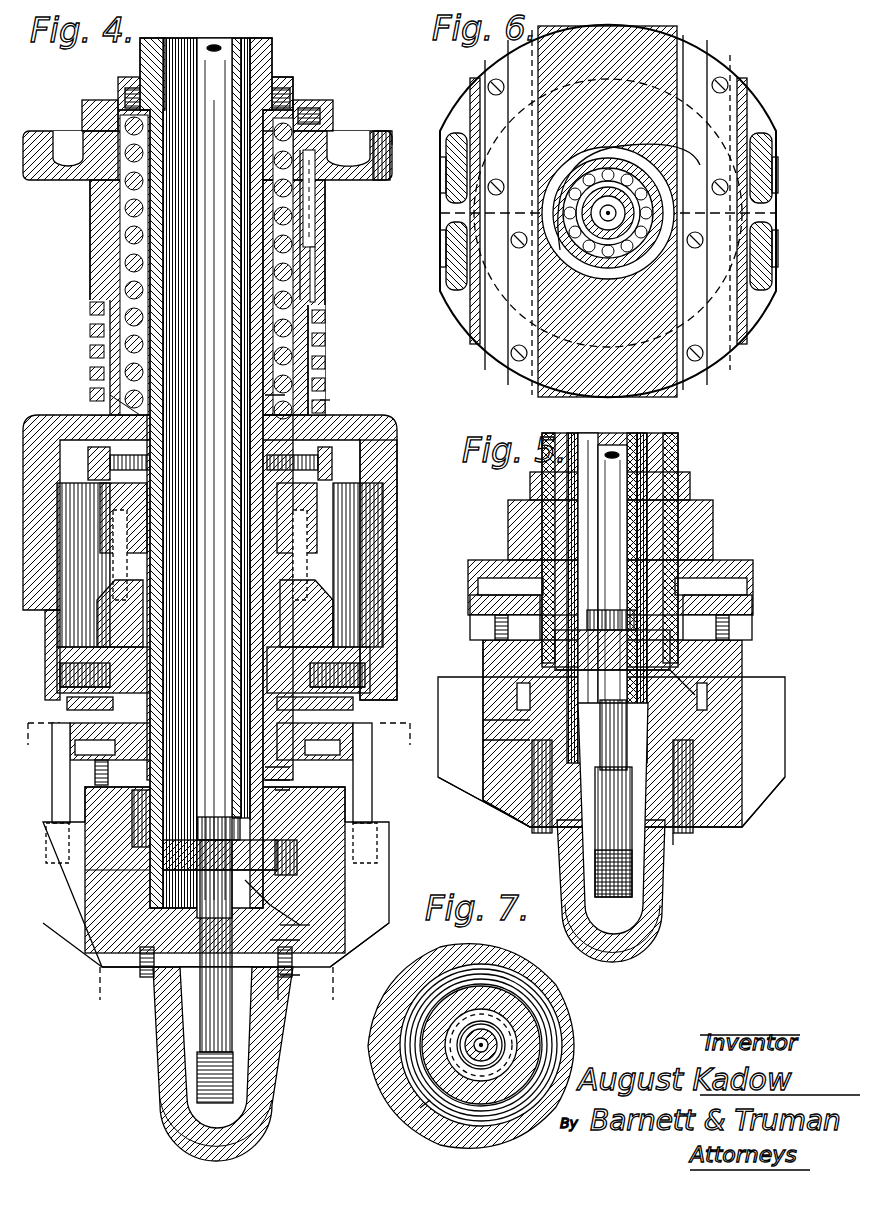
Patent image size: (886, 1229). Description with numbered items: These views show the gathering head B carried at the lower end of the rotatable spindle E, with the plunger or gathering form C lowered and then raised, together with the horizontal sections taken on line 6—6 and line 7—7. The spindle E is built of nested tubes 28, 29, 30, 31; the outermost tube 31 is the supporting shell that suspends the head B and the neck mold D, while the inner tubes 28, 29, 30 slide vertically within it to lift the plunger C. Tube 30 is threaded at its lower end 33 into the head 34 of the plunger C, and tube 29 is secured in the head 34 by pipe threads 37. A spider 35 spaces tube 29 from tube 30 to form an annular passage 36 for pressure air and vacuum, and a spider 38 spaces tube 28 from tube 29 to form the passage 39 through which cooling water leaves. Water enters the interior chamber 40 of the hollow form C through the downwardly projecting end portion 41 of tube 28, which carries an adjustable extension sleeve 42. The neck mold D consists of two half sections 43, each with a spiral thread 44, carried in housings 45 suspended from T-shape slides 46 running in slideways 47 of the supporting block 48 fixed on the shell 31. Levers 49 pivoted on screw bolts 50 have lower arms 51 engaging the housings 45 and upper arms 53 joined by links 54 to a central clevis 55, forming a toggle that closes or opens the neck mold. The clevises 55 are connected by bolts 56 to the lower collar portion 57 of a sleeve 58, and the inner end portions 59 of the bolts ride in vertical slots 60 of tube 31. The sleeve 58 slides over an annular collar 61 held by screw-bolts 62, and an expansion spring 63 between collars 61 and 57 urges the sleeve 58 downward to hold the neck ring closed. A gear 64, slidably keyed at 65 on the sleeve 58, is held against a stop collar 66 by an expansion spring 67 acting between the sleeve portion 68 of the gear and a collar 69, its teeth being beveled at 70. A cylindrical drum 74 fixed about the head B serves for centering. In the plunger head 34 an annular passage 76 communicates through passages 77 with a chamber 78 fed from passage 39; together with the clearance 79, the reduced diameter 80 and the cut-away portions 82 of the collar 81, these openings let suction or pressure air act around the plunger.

In FIG. 4, the innermost tube 28 is at (212, 46).
In FIG. 6, the innermost tube 28 is at (590, 150).
In FIG. 5, the innermost tube 28 is at (612, 452).
In FIG. 7, the innermost tube 28 is at (465, 1046).
In FIG. 4, the tube 29 is at (236, 42).
In FIG. 6, the tube 29 is at (630, 150).
In FIG. 5, the tube 29 is at (640, 448).
In FIG. 7, the tube 29 is at (455, 1036).
In FIG. 4, the tube 30 is at (262, 40).
In FIG. 6, the tube 30 is at (640, 160).
In FIG. 5, the tube 30 is at (665, 440).
In FIG. 4, the outermost tube 31 is at (274, 46).
In FIG. 5, the outermost tube 31 is at (678, 450).
In FIG. 4, the lower end 33 is at (240, 828).
In FIG. 5, the lower end 33 is at (660, 650).
In FIG. 4, the head 34 is at (277, 845).
In FIG. 5, the head 34 is at (665, 665).
In FIG. 4, the spider 35 is at (285, 397).
In FIG. 6, the spider 35 is at (575, 275).
In FIG. 5, the spider 35 is at (655, 560).
In FIG. 4, the intermediate annular passage 36 is at (290, 732).
In FIG. 5, the intermediate annular passage 36 is at (650, 515).
In FIG. 4, the pipe threads 37 is at (93, 926).
In FIG. 5, the pipe threads 37 is at (490, 680).
In FIG. 4, the spider 38 is at (100, 870).
In FIG. 6, the spider 38 is at (555, 258).
In FIG. 5, the spider 38 is at (500, 628).
In FIG. 4, the intermediate passage 39 is at (55, 835).
In FIG. 5, the intermediate passage 39 is at (500, 604).
In FIG. 4, the interior chamber 40 is at (165, 1085).
In FIG. 5, the interior chamber 40 is at (640, 925).
In FIG. 7, the interior chamber 40 is at (430, 1100).
In FIG. 4, the downwardly projecting end portion 41 is at (200, 992).
In FIG. 5, the downwardly projecting end portion 41 is at (600, 770).
In FIG. 4, the adjustable extension sleeve 42 is at (233, 1072).
In FIG. 5, the adjustable extension sleeve 42 is at (632, 885).
In FIG. 4, the half sections 43 is at (100, 968).
In FIG. 6, the half sections 43 is at (745, 108).
In FIG. 5, the half sections 43 is at (532, 800).
In FIG. 4, the spiral thread 44 is at (280, 1000).
In FIG. 5, the spiral thread 44 is at (673, 835).
In FIG. 4, the cage or housing 45 is at (43, 923).
In FIG. 6, the cage or housing 45 is at (462, 293).
In FIG. 5, the cage or housing 45 is at (470, 795).
In FIG. 4, the T-shape slides 46 is at (110, 745).
In FIG. 6, the T-shape slides 46 is at (522, 42).
In FIG. 5, the T-shape slides 46 is at (525, 565).
In FIG. 4, the slideways 47 is at (80, 705).
In FIG. 6, the slideways 47 is at (678, 42).
In FIG. 5, the slideways 47 is at (472, 570).
In FIG. 4, the supporting block 48 is at (350, 678).
In FIG. 5, the supporting block 48 is at (508, 524).
In FIG. 4, the levers 49 is at (55, 655).
In FIG. 4, the screw bolts 50 is at (50, 690).
In FIG. 4, the lower arm 51 is at (53, 800).
In FIG. 4, the upper arms 53 is at (105, 618).
In FIG. 4, the links 54 is at (113, 560).
In FIG. 4, the central clevis 55 is at (105, 522).
In FIG. 4, the bolts 56 is at (90, 410).
In FIG. 4, the lower collar portion 57 is at (385, 430).
In FIG. 4, the sleeve 58 is at (300, 308).
In FIG. 4, the inner end portions 59 is at (112, 392).
In FIG. 4, the vertical slots 60 is at (90, 362).
In FIG. 4, the annular collar 61 is at (282, 80).
In FIG. 4, the screw-bolts 62 is at (125, 97).
In FIG. 4, the expansion spring 63 is at (312, 220).
In FIG. 4, the gear 64 is at (382, 150).
In FIG. 4, the key 65 is at (312, 200).
In FIG. 4, the stop collar 66 is at (322, 104).
In FIG. 4, the expansion spring 67 is at (320, 340).
In FIG. 4, the sleeve portion 68 is at (318, 292).
In FIG. 4, the collar 69 is at (328, 408).
In FIG. 4, the beveled edges 70 is at (372, 132).
In FIG. 4, the cylindrical drum 74 is at (397, 507).
In FIG. 4, the annular passage 76 is at (300, 905).
In FIG. 5, the annular passage 76 is at (707, 695).
In FIG. 4, the passages 77 is at (265, 888).
In FIG. 5, the passages 77 is at (700, 690).
In FIG. 4, the chamber 78 is at (270, 860).
In FIG. 5, the chamber 78 is at (690, 640).
In FIG. 4, the clearance 79 is at (305, 918).
In FIG. 4, the reduced diameter portion 80 is at (272, 782).
In FIG. 5, the reduced diameter portion 80 is at (530, 728).
In FIG. 7, the reduced diameter portion 80 is at (545, 1010).
In FIG. 4, the collar 81 is at (280, 792).
In FIG. 5, the collar 81 is at (530, 745).
In FIG. 7, the collar 81 is at (540, 1000).
In FIG. 7, the cut-away portions 82 is at (545, 975).
In FIG. 4, the section line 6— 6 is at (219, 726).
In FIG. 4, the section line 7— 7 is at (219, 985).
In FIG. 4, the gathering head B is at (375, 759).
In FIG. 5, the gathering head B is at (712, 556).
In FIG. 4, the plunger C is at (163, 1110).
In FIG. 5, the plunger C is at (663, 905).
In FIG. 7, the plunger C is at (430, 1100).
In FIG. 4, the neck mold D is at (90, 950).
In FIG. 5, the neck mold D is at (720, 820).
In FIG. 4, the rotatable spindle E is at (220, 471).
In FIG. 5, the rotatable spindle E is at (680, 462).